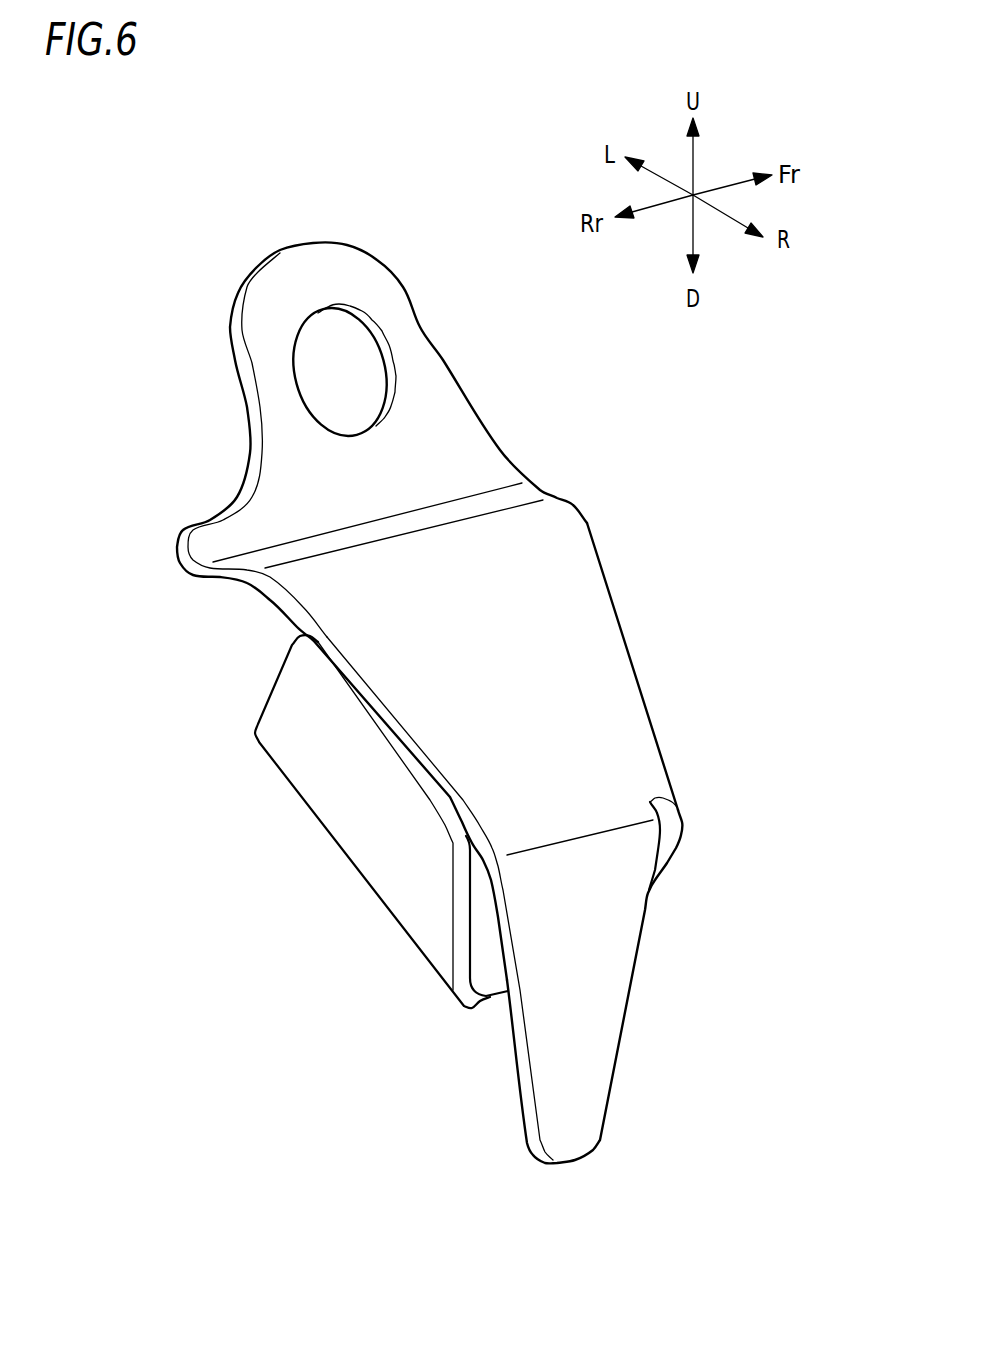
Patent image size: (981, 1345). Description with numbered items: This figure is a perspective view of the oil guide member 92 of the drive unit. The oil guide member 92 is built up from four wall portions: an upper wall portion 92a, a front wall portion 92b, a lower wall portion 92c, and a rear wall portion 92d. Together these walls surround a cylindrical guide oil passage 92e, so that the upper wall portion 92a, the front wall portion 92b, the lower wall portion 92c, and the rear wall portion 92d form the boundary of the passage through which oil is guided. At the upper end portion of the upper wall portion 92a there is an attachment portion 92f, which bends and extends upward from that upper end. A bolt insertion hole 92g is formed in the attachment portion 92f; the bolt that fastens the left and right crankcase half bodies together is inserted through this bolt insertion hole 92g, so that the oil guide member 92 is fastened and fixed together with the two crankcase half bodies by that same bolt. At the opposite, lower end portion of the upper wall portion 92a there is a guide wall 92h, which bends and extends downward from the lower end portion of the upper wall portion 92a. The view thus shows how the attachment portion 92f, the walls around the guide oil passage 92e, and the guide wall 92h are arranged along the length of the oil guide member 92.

The oil guide member 92 is at (460, 685).
The upper wall portion 92a is at (563, 583).
The front wall portion 92b is at (638, 677).
The lower wall portion 92c is at (477, 1007).
The rear wall portion 92d is at (342, 803).
The guide oil passage 92e is at (485, 932).
The attachment portion 92f is at (428, 372).
The bolt insertion hole 92g is at (372, 338).
The guide wall 92h is at (600, 978).